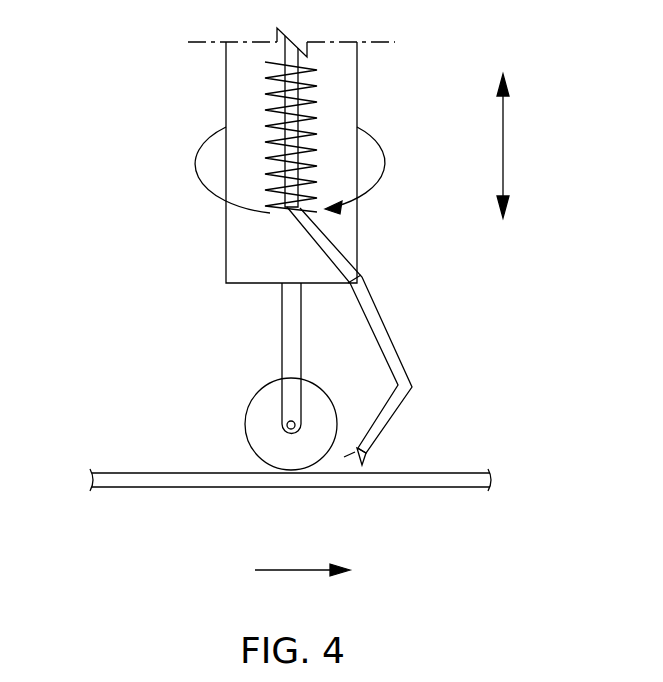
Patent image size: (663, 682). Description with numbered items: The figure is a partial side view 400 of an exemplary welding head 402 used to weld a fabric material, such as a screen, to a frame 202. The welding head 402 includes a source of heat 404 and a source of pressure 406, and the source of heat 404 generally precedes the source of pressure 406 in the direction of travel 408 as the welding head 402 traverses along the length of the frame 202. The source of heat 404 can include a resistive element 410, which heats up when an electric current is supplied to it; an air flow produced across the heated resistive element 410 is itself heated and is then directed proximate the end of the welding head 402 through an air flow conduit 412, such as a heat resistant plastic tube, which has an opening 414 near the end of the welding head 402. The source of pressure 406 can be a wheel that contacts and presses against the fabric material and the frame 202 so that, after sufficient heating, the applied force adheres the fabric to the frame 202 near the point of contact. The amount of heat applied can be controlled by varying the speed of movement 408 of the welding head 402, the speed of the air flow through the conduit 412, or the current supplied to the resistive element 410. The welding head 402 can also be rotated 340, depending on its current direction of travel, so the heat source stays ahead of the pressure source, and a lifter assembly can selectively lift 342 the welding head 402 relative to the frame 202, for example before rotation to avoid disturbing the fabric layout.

The partial side view 400 is at (98, 36).
The welding head 402 is at (233, 100).
The rotation of the welding head 340 is at (200, 160).
The lifting of the welding head 342 is at (504, 148).
The resistive element 410 is at (273, 177).
The air flow conduit 412 is at (388, 330).
The opening 414 is at (365, 452).
The source of heat 404 is at (360, 462).
The source of pressure 406 is at (290, 464).
The frame 202 is at (148, 490).
The direction of travel 408 is at (302, 572).